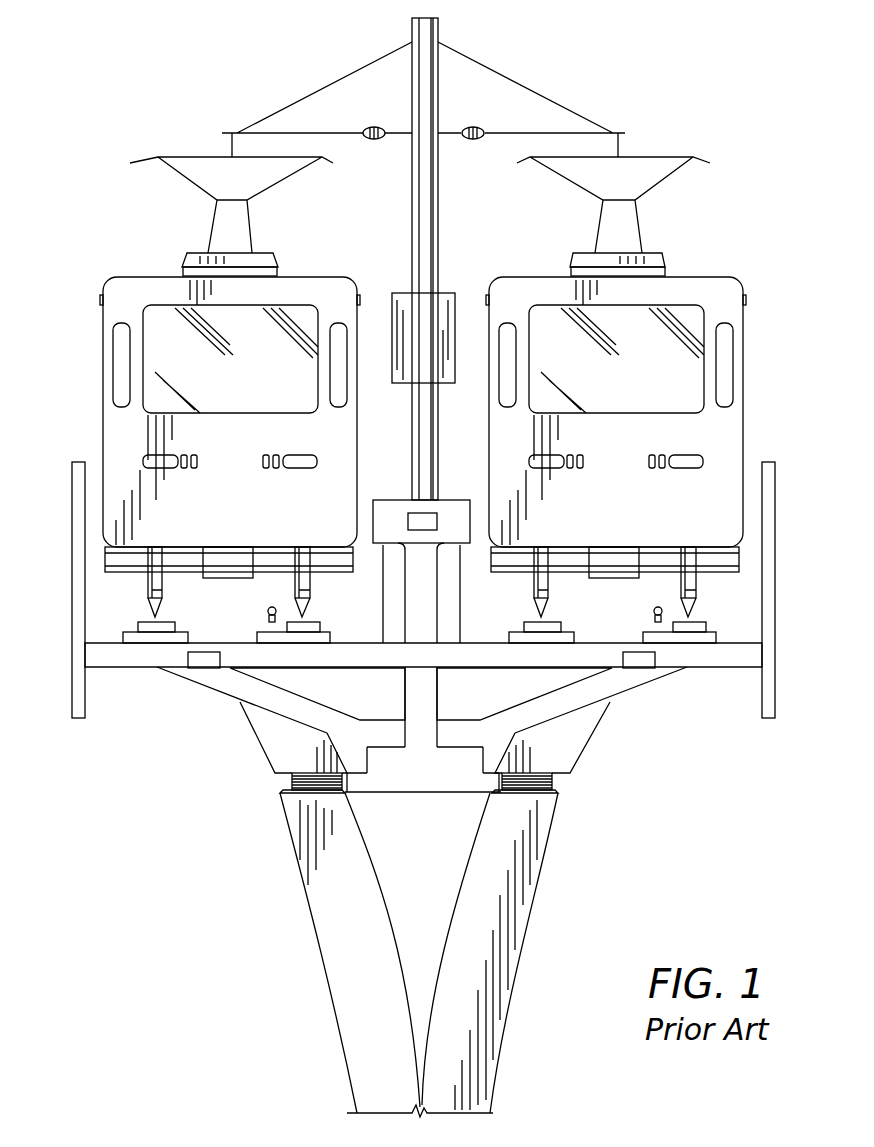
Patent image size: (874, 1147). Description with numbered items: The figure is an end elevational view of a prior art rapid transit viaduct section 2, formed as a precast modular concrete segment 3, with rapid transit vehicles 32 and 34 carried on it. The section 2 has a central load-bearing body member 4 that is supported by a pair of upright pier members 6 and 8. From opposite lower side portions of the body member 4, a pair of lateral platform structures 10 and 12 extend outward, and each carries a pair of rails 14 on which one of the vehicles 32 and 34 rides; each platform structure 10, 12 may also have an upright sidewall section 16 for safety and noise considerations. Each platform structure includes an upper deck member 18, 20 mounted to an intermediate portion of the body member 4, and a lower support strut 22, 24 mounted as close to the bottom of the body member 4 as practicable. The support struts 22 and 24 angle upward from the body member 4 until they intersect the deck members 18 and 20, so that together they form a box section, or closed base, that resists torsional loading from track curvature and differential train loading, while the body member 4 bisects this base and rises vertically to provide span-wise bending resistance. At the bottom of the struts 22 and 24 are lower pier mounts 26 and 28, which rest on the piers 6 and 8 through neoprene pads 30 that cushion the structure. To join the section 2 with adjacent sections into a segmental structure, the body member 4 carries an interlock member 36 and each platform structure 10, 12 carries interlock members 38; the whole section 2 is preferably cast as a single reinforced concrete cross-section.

The rapid transit viaduct section 2 is at (137, 730).
The concrete segment 3 is at (630, 680).
The body member 4 is at (442, 500).
The pier member 6 is at (348, 995).
The pier member 8 is at (508, 957).
The lateral platform structure 10 is at (233, 722).
The lateral platform structure 12 is at (625, 722).
The rails 14 is at (155, 617).
The upright sidewall section 16 is at (72, 708).
The deck member 18 is at (372, 643).
The deck member 20 is at (477, 643).
The lower support strut 22 is at (320, 702).
The lower support strut 24 is at (527, 702).
The lower pier mount 26 is at (273, 775).
The lower pier mount 28 is at (570, 773).
The neoprene pads 30 is at (300, 793).
The rapid transit vehicle 32 is at (148, 277).
The rapid transit vehicle 34 is at (710, 277).
The interlock member 36 is at (415, 513).
The interlock members 38 is at (196, 668).